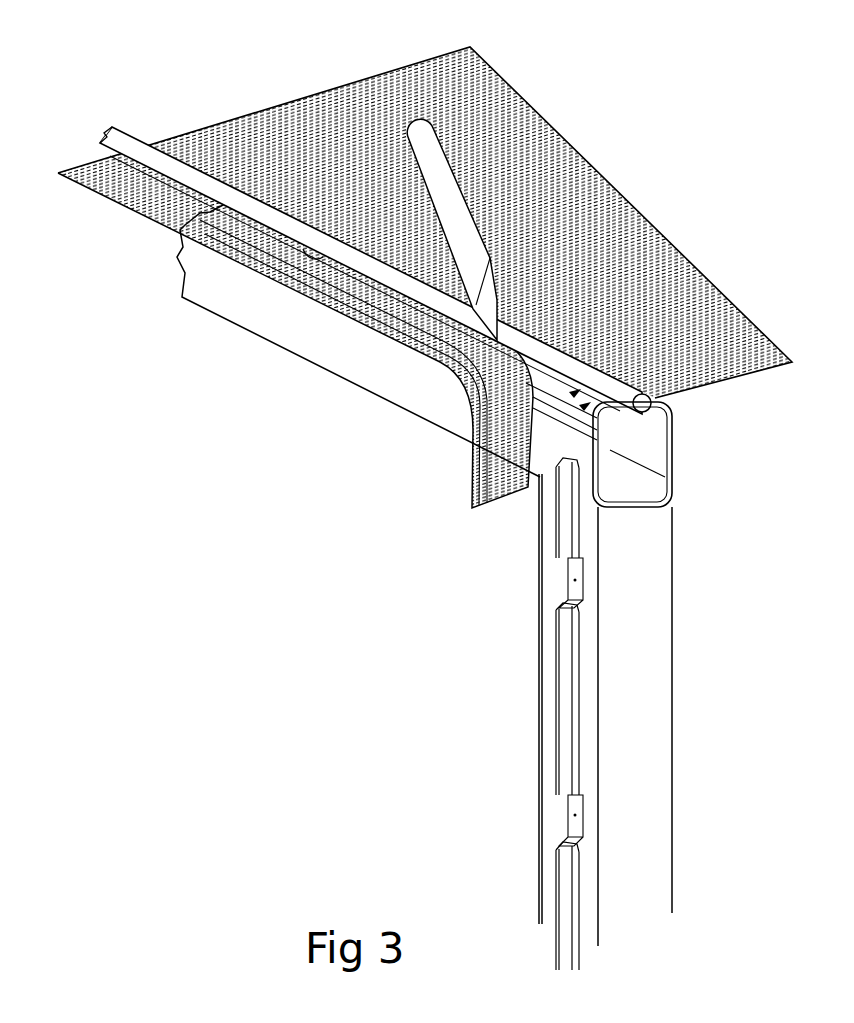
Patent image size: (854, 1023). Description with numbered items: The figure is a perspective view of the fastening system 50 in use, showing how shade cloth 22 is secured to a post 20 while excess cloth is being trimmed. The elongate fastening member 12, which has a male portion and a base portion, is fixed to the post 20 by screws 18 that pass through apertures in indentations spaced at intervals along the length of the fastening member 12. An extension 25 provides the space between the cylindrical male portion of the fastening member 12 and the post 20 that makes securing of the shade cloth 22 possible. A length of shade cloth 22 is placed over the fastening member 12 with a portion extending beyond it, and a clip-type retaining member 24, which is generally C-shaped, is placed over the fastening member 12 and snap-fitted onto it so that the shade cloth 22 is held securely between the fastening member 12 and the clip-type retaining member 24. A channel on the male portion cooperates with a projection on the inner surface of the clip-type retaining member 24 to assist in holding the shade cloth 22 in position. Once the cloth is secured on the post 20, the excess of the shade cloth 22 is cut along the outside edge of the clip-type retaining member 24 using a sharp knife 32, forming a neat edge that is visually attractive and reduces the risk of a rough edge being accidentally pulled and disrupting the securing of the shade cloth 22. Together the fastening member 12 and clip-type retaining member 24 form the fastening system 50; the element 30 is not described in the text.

The fastening member 12 is at (588, 403).
The screws 18 is at (622, 434).
The post 20 is at (673, 418).
The shade cloth 22 is at (727, 330).
The clip-type retaining member 24 is at (568, 374).
The extension 25 is at (577, 734).
The attachment 30 is at (577, 391).
The sharp knife 32 is at (437, 185).
The fastening system 50 is at (578, 392).